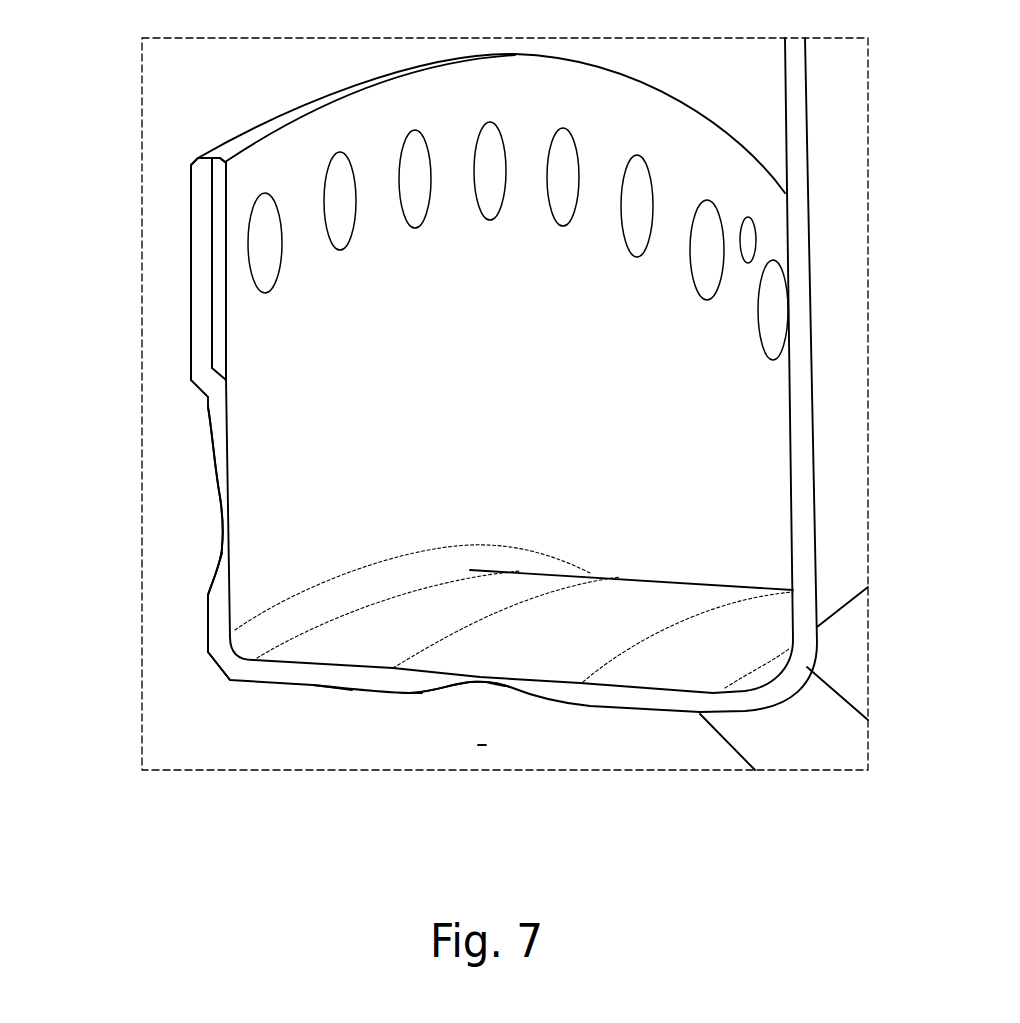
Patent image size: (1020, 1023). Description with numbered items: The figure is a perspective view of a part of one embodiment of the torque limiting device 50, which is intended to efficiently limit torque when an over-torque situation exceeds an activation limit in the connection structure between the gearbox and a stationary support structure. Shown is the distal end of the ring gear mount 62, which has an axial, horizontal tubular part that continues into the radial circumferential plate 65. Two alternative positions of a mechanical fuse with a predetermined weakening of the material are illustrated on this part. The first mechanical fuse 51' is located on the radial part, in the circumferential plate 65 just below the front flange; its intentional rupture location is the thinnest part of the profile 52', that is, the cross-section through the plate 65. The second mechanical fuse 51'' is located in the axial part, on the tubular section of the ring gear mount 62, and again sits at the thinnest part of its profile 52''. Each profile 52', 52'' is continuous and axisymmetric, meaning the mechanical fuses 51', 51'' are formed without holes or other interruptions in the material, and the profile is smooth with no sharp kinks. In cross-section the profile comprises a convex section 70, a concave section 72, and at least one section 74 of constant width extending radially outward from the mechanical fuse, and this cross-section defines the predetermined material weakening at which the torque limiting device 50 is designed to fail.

The torque limiting device 50 is at (163, 455).
The ring gear mount 62 is at (625, 697).
The circumferential plate 65 is at (202, 300).
The convex section 70 is at (208, 595).
The concave section 72 is at (222, 538).
The section with constant width 74 is at (208, 640).
The profile 52' is at (137, 562).
The mechanical fuse 51' is at (138, 602).
The profile 52'' is at (471, 791).
The mechanical fuse 51'' is at (528, 760).